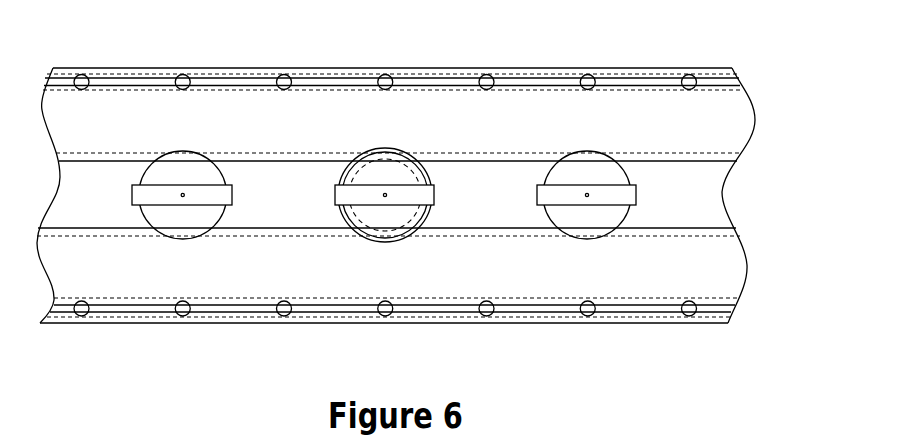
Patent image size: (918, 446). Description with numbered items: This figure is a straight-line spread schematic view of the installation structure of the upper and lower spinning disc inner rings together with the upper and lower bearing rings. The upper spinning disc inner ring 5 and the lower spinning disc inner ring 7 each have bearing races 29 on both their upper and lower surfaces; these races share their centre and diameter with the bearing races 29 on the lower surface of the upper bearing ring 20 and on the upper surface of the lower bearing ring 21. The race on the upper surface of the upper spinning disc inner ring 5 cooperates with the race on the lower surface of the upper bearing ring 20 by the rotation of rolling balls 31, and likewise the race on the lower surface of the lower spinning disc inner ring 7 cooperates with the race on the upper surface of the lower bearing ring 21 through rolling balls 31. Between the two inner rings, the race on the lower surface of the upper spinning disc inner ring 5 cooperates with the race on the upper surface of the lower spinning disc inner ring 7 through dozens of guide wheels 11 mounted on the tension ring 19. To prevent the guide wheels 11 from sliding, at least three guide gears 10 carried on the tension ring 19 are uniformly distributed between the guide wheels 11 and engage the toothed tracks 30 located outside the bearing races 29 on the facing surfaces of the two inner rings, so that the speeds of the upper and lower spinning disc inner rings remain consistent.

The upper spinning disc inner ring 5 is at (303, 115).
The lower spinning disc inner ring 7 is at (590, 268).
The guide gear 10 is at (385, 175).
The guide wheel 11 is at (182, 175).
The tension ring 19 is at (683, 190).
The upper bearing ring 20 is at (62, 72).
The lower bearing ring 21 is at (523, 323).
The bearing race 29 is at (527, 90).
The toothed track 30 is at (88, 162).
The rolling ball 31 is at (688, 78).